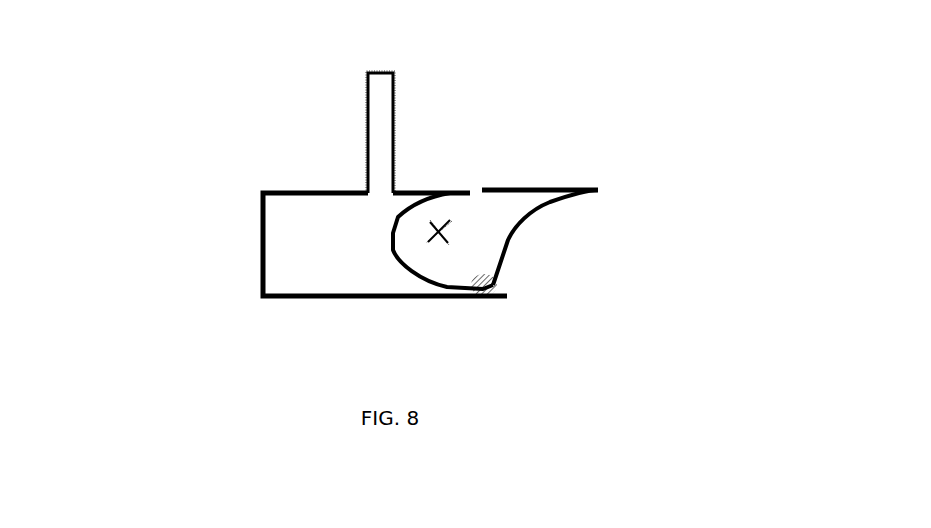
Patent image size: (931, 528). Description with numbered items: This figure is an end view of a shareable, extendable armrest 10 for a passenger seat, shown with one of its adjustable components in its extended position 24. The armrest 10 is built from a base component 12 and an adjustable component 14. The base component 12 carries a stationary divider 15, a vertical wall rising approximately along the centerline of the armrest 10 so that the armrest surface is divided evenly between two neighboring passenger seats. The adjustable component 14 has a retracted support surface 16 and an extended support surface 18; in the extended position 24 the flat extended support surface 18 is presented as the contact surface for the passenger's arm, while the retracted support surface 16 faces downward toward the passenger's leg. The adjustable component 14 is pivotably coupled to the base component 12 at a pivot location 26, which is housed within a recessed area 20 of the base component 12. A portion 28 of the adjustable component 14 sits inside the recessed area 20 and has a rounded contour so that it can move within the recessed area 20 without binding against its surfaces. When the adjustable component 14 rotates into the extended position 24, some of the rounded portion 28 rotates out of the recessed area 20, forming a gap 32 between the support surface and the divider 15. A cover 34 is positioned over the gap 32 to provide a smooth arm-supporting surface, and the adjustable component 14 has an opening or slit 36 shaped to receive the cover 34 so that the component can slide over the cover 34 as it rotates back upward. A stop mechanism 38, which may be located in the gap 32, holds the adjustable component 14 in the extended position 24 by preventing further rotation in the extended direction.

The armrest 10 is at (170, 129).
The base component 12 is at (314, 246).
The adjustable component 14 is at (561, 115).
The stationary divider 15 is at (368, 98).
The retracted support surface 16 is at (515, 237).
The extended support surface 18 is at (582, 181).
The recessed area 20 is at (293, 233).
The extended position 24 is at (697, 159).
The pivot location 26 is at (423, 233).
The portion of the adjustable component 28 is at (448, 288).
The gap 32 is at (407, 198).
The cover 34 is at (443, 236).
The opening or slit 36 is at (475, 198).
The stop mechanism 38 is at (492, 297).